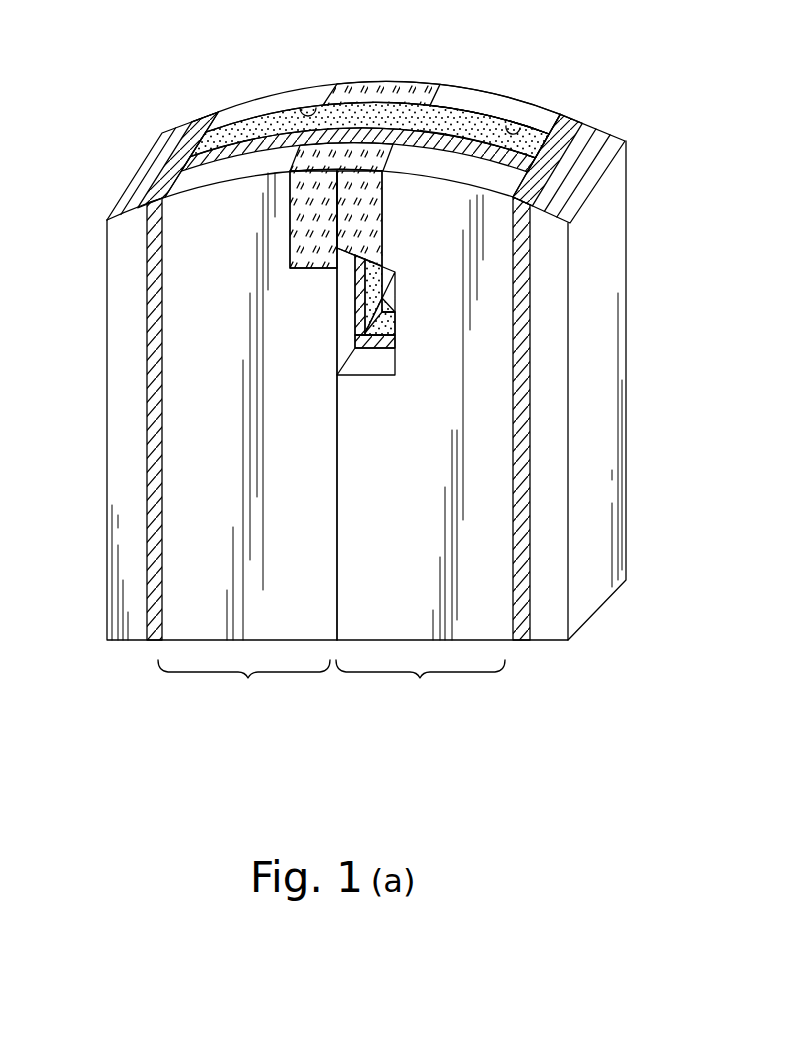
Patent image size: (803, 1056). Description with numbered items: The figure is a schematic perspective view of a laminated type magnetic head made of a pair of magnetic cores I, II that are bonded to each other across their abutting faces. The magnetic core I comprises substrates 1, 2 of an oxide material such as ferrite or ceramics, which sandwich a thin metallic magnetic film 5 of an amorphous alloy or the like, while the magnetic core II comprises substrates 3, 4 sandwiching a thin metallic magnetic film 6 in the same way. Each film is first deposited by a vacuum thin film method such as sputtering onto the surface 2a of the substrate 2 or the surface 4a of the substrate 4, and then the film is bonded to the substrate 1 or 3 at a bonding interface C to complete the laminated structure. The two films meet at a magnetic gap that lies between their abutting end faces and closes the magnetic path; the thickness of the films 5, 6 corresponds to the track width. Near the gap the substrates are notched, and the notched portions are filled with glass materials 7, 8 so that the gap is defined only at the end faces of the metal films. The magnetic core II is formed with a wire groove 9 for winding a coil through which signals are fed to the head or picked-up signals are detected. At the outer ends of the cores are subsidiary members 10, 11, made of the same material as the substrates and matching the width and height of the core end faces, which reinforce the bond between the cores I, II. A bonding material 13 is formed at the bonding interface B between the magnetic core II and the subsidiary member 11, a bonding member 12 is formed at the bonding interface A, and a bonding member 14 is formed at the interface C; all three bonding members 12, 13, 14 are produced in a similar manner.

The substrate 1 is at (187, 483).
The substrate 2 is at (243, 115).
The surface of substrate 2a is at (307, 108).
The substrate 3 is at (488, 568).
The substrate 4 is at (460, 92).
The surface of substrate 4a is at (520, 130).
The thin metallic magnetic film 5 is at (270, 122).
The thin metallic magnetic film 6 is at (477, 113).
The glass material 7 is at (290, 253).
The glass material 8 is at (377, 228).
The wire groove 9 is at (368, 128).
The subsidiary member 10 is at (128, 585).
The subsidiary member 11 is at (593, 472).
The bonding member 12 is at (182, 137).
The bonding material 13 is at (626, 142).
The bonding member 14 is at (527, 237).
The bonding interface A is at (200, 145).
The bonding interface B is at (565, 140).
The bonding interface C is at (203, 167).
The magnetic core I is at (244, 690).
The magnetic core II is at (420, 690).